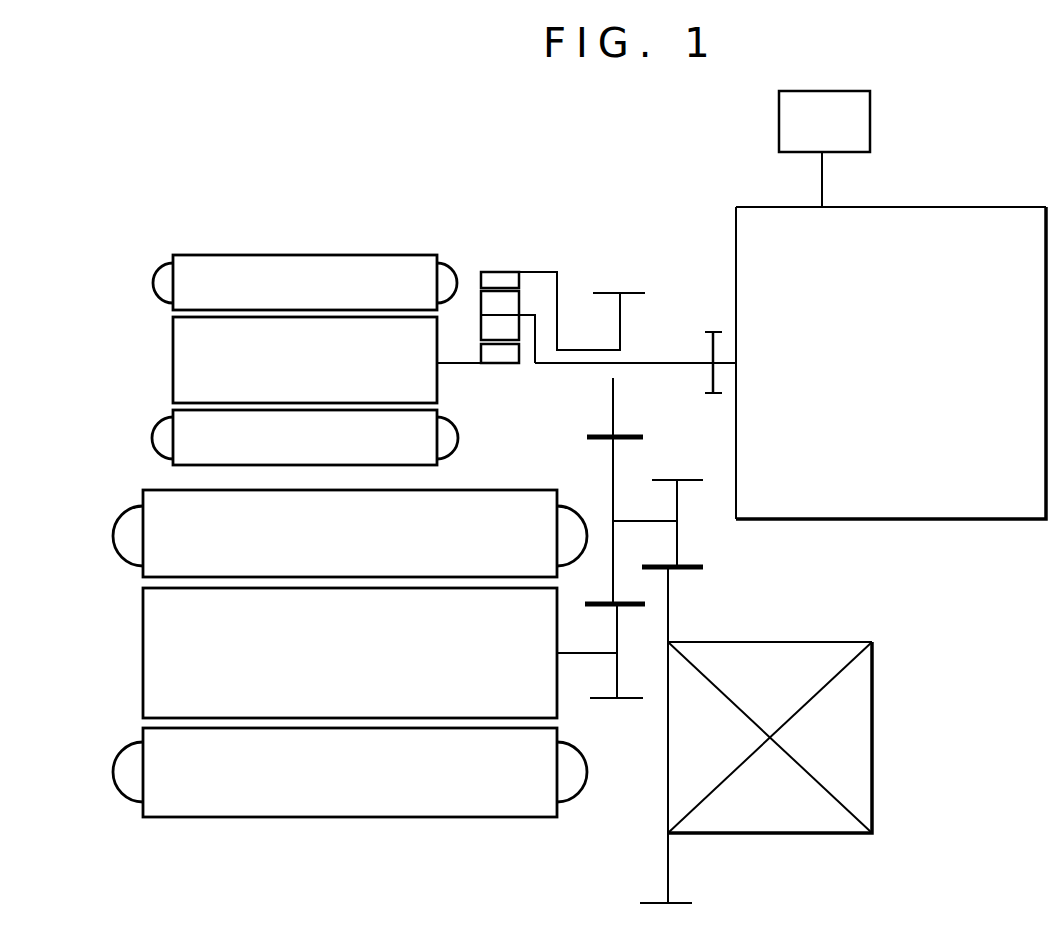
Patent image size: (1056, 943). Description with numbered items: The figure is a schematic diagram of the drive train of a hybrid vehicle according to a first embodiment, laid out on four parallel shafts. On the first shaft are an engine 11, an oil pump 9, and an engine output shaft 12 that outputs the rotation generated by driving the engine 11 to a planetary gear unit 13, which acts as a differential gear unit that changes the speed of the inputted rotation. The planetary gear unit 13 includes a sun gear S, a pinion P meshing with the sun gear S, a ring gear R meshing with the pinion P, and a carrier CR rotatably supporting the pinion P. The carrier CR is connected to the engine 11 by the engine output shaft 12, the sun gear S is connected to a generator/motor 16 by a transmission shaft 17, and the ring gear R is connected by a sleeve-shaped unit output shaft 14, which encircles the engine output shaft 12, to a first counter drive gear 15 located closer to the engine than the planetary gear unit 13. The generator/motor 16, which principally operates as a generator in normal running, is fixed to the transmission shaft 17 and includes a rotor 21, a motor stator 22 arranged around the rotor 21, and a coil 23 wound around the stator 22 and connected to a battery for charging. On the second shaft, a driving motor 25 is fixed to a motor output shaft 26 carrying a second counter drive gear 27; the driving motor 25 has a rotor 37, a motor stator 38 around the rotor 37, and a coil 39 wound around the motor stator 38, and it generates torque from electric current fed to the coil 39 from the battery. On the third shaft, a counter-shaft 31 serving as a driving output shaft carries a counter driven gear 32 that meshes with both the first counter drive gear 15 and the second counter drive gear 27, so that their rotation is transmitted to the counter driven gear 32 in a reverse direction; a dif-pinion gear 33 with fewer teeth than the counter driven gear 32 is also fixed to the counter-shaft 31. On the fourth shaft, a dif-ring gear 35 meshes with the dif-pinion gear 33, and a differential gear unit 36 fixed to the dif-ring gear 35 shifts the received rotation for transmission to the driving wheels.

The oil pump 9 is at (812, 137).
The engine 11 is at (970, 207).
The engine output shaft 12 is at (667, 362).
The planetary gear unit 13 is at (537, 314).
The unit output shaft 14 is at (585, 348).
The first counter drive gear 15 is at (630, 293).
The generator/motor 16 is at (283, 319).
The transmission shaft 17 is at (462, 366).
The rotor 21 is at (173, 360).
The motor stator 22 is at (202, 255).
The coil 23 is at (156, 280).
The driving motor 25 is at (325, 668).
The motor output shaft 26 is at (585, 655).
The second counter drive gear 27 is at (640, 700).
The counter-shaft 31 is at (620, 521).
The counter driven gear 32 is at (592, 440).
The dif-pinion gear 33 is at (682, 480).
The dif-ring gear 35 is at (687, 902).
The differential gear unit 36 is at (873, 732).
The rotor 37 is at (143, 661).
The motor stator 38 is at (150, 490).
The coil 39 is at (116, 550).
The pinion P is at (481, 300).
The ring gear R is at (490, 272).
The sun gear S is at (496, 356).
The carrier CR is at (530, 352).